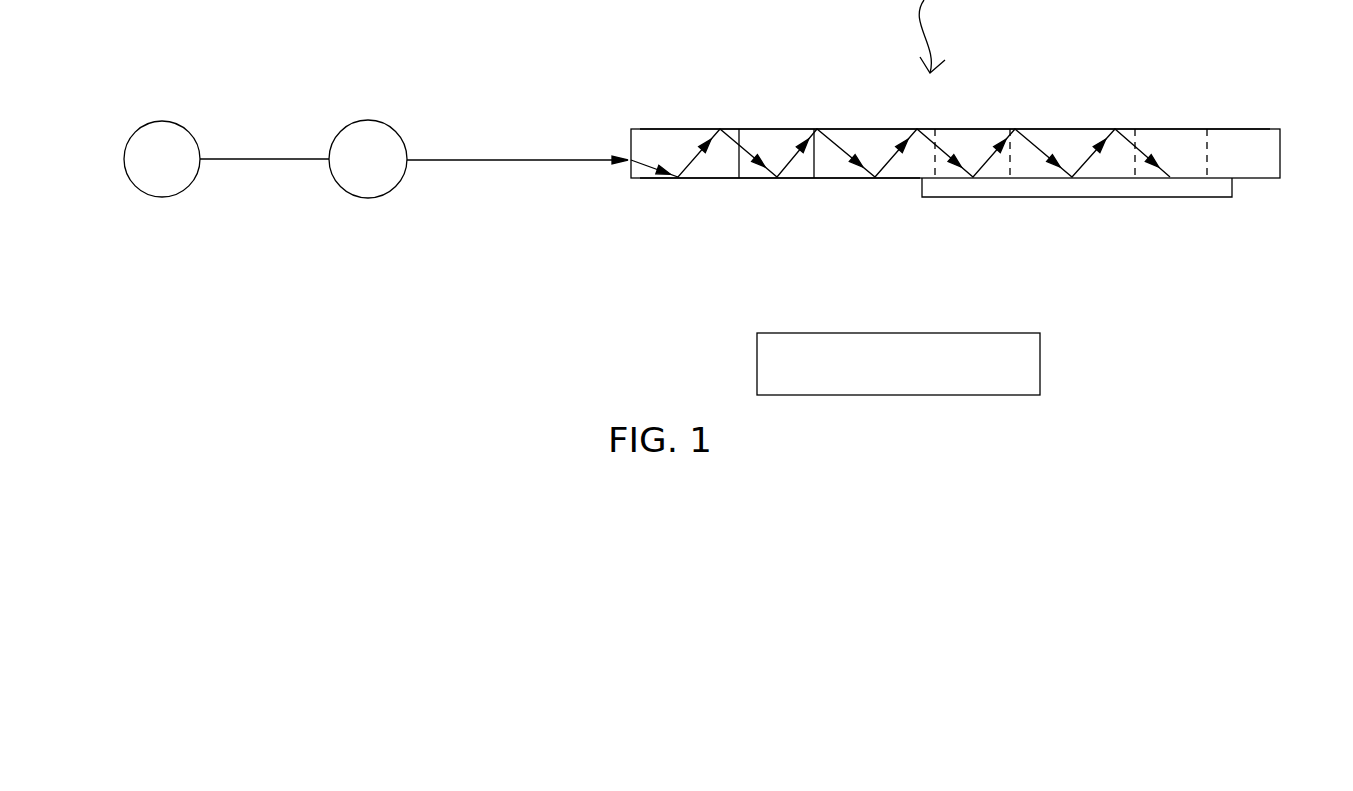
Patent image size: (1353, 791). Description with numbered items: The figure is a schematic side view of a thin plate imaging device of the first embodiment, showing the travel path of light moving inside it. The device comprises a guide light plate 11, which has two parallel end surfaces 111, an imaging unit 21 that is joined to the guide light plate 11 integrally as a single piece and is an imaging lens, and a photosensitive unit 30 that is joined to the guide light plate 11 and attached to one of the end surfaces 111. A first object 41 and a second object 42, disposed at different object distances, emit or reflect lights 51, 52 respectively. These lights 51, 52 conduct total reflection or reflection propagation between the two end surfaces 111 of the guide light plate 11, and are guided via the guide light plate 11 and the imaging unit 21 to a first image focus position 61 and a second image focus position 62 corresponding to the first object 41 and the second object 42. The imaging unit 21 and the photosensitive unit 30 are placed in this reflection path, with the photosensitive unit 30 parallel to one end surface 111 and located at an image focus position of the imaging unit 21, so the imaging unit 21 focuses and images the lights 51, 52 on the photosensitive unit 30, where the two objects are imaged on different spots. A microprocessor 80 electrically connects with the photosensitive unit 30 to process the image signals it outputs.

The guide light plate 11 is at (690, 133).
The end surface 111 is at (865, 128).
The imaging unit 21 is at (752, 172).
The photosensitive unit 30 is at (1067, 192).
The first object 41 is at (167, 181).
The second object 42 is at (375, 181).
The light 51 is at (262, 160).
The light 52 is at (515, 160).
The first image focus position 61 is at (982, 130).
The second image focus position 62 is at (1182, 130).
The microprocessor 80 is at (1035, 350).